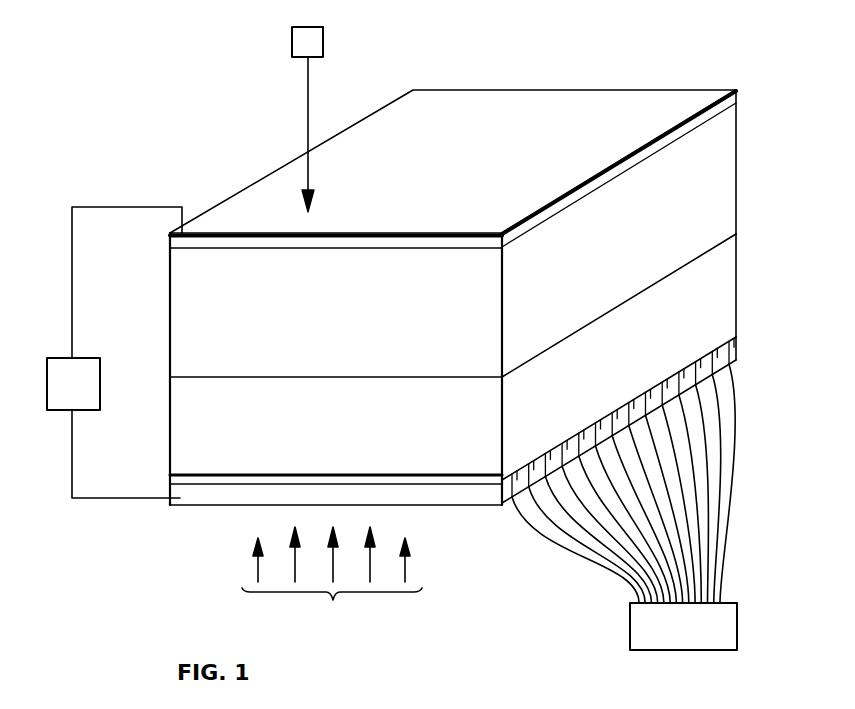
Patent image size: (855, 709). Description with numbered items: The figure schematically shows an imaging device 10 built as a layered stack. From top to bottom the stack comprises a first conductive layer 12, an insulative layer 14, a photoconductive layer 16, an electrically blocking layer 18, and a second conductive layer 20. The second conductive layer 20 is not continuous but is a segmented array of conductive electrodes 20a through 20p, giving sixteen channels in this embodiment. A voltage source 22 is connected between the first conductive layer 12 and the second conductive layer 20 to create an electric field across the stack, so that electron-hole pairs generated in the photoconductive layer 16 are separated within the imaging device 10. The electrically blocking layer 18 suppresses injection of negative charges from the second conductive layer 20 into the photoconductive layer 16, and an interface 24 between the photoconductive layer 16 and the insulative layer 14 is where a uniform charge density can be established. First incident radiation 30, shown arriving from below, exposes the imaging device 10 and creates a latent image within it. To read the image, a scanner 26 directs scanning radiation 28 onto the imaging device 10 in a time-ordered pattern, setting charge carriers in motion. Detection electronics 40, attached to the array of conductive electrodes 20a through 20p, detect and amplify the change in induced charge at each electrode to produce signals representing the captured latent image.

The imaging device 10 is at (618, 68).
The first conductive layer 12 is at (733, 101).
The insulative layer 14 is at (736, 162).
The photoconductive layer 16 is at (736, 268).
The electrically blocking layer 18 is at (736, 338).
The second conductive layer 20 is at (215, 505).
The conductive electrode 20a is at (502, 492).
The conductive electrode 20p is at (736, 350).
The voltage source 22 is at (85, 413).
The interface 24 is at (182, 377).
The scanner 26 is at (325, 38).
The scanning radiation 28 is at (306, 99).
The first incident radiation 30 is at (332, 578).
The detection electronics 40 is at (658, 652).